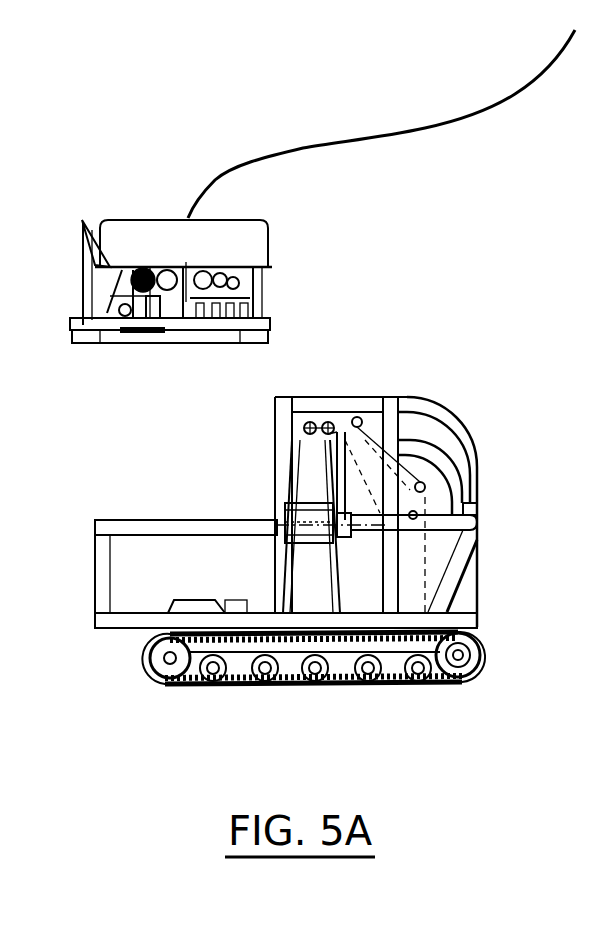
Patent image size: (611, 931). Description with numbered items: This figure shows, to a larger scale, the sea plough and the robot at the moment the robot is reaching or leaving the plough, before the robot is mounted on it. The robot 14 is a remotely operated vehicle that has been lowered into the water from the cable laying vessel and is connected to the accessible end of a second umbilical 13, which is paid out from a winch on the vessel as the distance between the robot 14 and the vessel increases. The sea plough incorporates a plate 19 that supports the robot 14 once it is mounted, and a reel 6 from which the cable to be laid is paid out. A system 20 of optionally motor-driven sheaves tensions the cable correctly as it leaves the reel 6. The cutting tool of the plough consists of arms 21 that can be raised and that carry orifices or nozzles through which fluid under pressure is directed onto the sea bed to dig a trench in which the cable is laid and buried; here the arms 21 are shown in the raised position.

The second umbilical 13 is at (427, 127).
The robot 14 is at (296, 245).
The system of sheaves 20 is at (419, 482).
The reel 6 is at (277, 490).
The plate 19 is at (122, 520).
The arms 21 is at (455, 578).